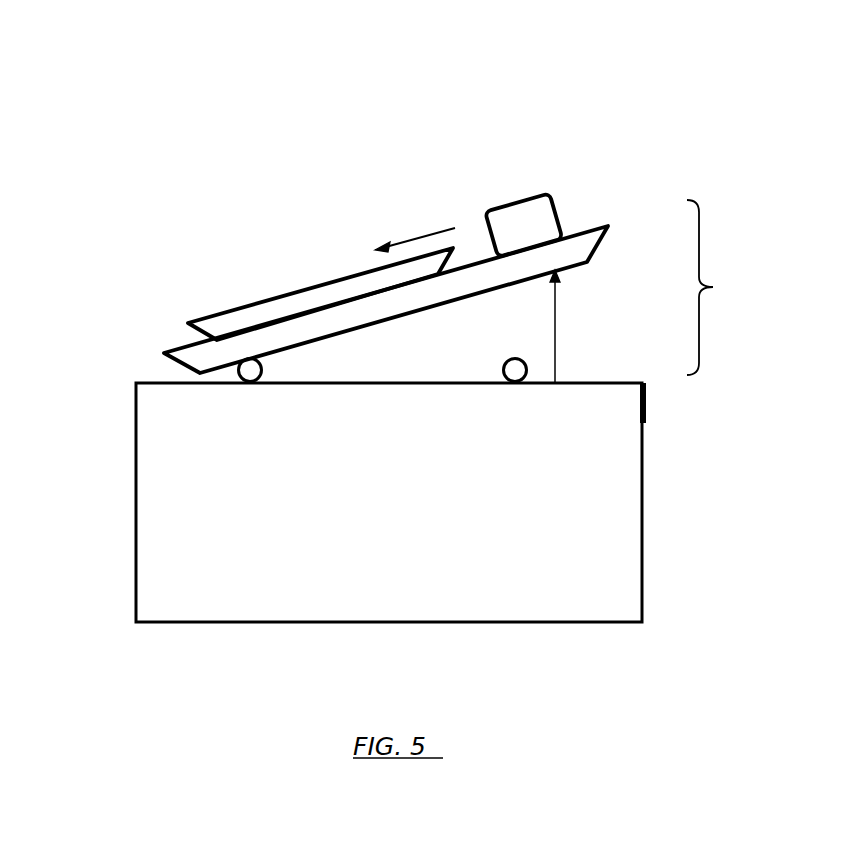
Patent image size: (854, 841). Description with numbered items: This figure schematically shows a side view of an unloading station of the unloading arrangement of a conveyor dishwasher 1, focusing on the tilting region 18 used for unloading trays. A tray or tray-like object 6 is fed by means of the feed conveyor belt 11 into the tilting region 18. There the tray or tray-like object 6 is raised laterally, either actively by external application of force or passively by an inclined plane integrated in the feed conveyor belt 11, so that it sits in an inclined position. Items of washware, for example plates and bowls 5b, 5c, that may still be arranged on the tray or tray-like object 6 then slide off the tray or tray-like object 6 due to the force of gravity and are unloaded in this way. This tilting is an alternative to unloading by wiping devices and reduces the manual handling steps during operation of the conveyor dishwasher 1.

The conveyor dishwasher 1 is at (152, 557).
The item of washware 5b is at (257, 322).
The item of washware 5c is at (517, 215).
The tray or tray-like object 6 is at (368, 317).
The feed conveyor belt 11 is at (243, 365).
The tilting region 18 is at (649, 291).